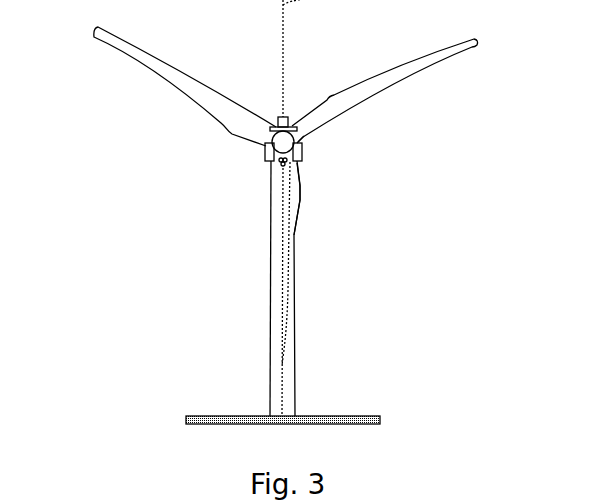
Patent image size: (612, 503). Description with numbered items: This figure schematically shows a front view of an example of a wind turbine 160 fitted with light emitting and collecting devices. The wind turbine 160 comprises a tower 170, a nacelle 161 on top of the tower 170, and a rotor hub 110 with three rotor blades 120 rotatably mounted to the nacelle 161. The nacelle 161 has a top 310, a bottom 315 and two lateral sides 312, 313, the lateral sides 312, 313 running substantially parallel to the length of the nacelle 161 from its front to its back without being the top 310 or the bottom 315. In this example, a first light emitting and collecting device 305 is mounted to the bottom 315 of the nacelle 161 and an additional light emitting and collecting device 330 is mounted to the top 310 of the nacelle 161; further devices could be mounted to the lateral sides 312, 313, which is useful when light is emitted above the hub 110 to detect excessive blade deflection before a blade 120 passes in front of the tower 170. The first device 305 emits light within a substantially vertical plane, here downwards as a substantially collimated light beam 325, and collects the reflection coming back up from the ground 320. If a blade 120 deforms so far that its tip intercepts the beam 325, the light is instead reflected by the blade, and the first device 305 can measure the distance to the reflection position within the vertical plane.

The rotor hub 110 is at (263, 152).
The rotor blade 120 is at (428, 64).
The wind turbine 160 is at (120, 333).
The nacelle 161 is at (302, 153).
The tower 170 is at (287, 403).
The first light emitting and collecting device 305 is at (274, 164).
The top of the nacelle 310 is at (288, 117).
The lateral side of the nacelle 312 is at (263, 153).
The lateral side of the nacelle 313 is at (303, 146).
The bottom of the nacelle 315 is at (298, 166).
The ground 320 is at (230, 416).
The collimated light beam 325 is at (287, 368).
The additional light emitting and collecting device 330 is at (279, 116).